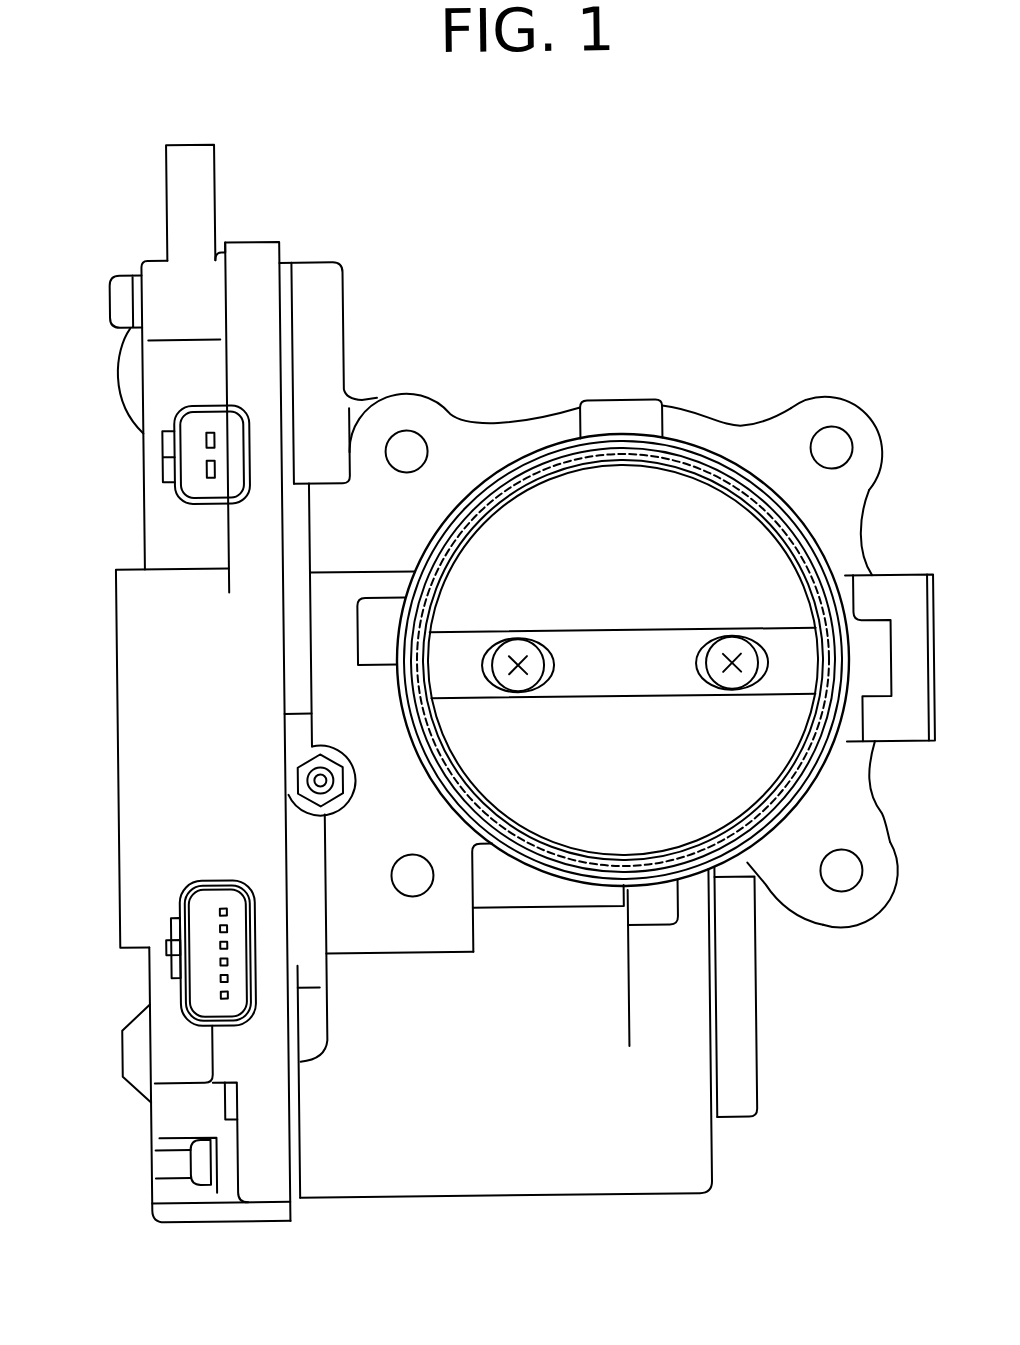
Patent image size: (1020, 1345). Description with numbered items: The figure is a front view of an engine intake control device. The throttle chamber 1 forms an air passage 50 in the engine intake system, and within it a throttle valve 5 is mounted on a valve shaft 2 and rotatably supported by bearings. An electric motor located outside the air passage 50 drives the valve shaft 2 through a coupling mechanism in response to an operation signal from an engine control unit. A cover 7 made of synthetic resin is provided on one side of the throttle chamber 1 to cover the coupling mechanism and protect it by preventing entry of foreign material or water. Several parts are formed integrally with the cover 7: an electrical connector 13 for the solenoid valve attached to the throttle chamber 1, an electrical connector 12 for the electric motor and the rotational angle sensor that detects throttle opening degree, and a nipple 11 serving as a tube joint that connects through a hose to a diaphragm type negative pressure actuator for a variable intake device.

The throttle chamber 1 is at (732, 1048).
The valve shaft 2 is at (620, 668).
The throttle valve 5 is at (627, 513).
The air passage 50 is at (682, 489).
The cover 7 is at (149, 723).
The nipple 11 is at (205, 175).
The electrical connector 12 is at (177, 888).
The electrical connector 13 is at (202, 498).